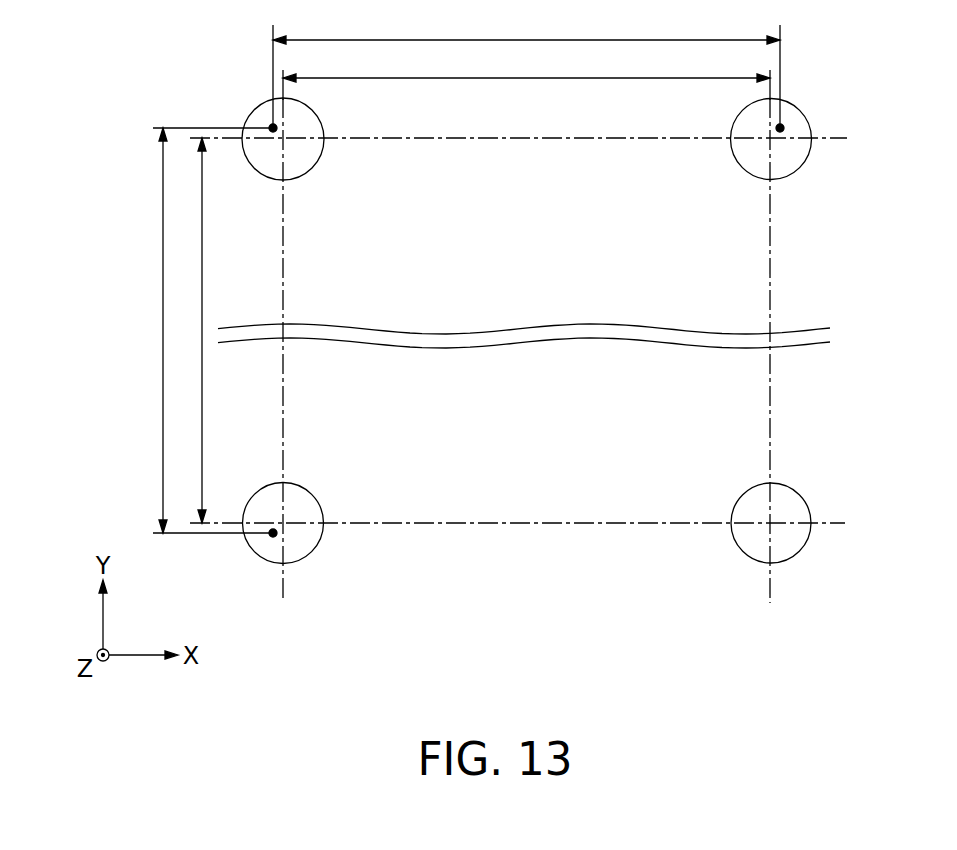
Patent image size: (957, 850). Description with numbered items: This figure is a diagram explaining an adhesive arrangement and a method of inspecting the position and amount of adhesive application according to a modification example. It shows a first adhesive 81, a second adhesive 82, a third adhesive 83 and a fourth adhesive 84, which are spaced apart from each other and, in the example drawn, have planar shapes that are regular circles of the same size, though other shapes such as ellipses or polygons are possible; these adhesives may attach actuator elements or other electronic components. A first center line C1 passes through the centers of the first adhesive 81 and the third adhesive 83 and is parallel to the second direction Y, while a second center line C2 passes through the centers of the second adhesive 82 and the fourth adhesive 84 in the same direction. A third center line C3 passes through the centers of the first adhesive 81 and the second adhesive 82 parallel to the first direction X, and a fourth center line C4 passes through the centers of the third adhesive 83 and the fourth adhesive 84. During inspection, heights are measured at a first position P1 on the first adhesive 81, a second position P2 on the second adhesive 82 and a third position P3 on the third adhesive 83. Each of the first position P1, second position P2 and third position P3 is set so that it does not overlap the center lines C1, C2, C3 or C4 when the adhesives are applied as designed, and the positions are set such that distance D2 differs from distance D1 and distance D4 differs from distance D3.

The first adhesive 81 is at (318, 112).
The second adhesive 82 is at (736, 112).
The third adhesive 83 is at (313, 551).
The fourth adhesive 84 is at (738, 546).
The first position P1 is at (273, 128).
The second position P2 is at (780, 128).
The third position P3 is at (273, 533).
The first center line C1 is at (283, 229).
The second center line C2 is at (770, 230).
The third center line C3 is at (495, 140).
The fourth center line C4 is at (493, 523).
The distance D1 is at (526, 75).
The distance D2 is at (526, 69).
The distance D3 is at (187, 330).
The distance D4 is at (200, 330).